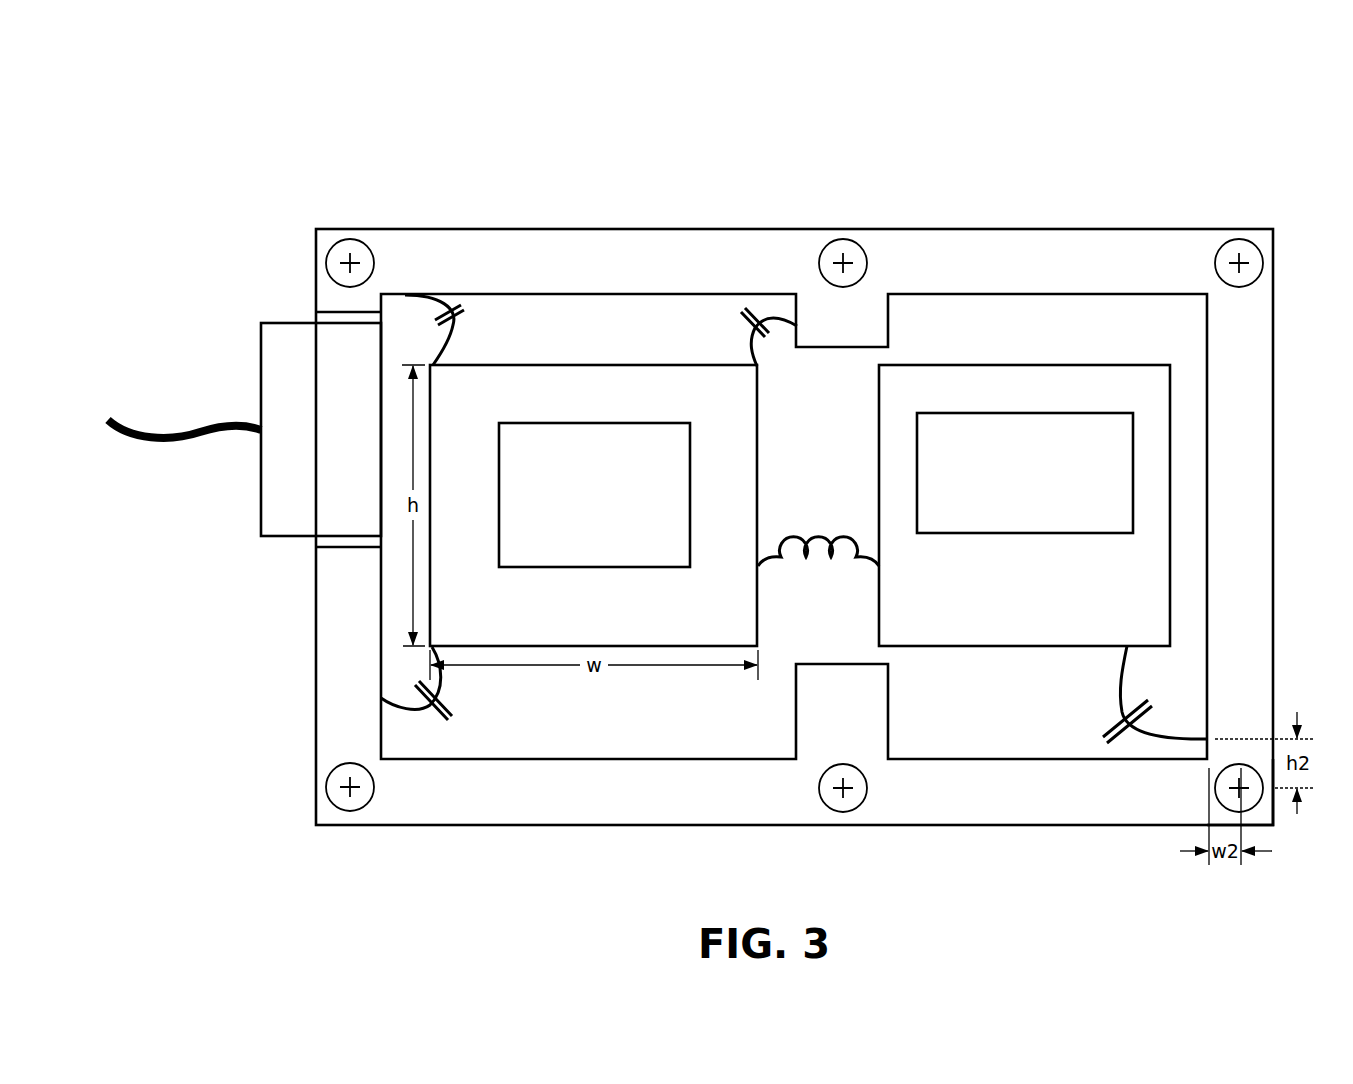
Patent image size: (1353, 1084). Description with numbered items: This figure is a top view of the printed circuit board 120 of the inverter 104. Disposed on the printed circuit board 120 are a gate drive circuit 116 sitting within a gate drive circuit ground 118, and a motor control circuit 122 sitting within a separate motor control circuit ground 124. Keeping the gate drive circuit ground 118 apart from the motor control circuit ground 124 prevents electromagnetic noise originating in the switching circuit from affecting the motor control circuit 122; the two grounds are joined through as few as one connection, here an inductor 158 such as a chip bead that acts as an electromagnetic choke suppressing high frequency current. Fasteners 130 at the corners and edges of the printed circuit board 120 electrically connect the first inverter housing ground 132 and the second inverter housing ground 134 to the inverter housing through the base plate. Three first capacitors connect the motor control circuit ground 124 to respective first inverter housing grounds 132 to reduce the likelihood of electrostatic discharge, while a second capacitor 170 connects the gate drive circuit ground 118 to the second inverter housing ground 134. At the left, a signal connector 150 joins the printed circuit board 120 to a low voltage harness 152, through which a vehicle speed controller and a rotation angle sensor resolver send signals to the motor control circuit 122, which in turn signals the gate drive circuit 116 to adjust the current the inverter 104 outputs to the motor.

The inverter 104 is at (112, 68).
The gate drive circuit 116 is at (1025, 473).
The gate drive circuit ground 118 is at (1024, 505).
The printed circuit board 120 is at (794, 526).
The motor control circuit 122 is at (594, 495).
The motor control circuit ground 124 is at (593, 505).
The fasteners 130 is at (364, 242).
The first inverter housing ground 132 is at (442, 218).
The second inverter housing ground 134 is at (1190, 800).
The signal connector 150 is at (321, 429).
The low voltage harness 152 is at (166, 443).
The inductor 158 is at (797, 533).
The second capacitor 170 is at (1088, 708).